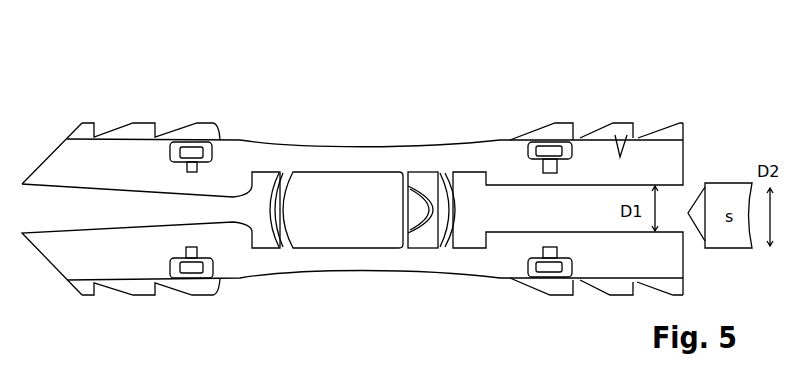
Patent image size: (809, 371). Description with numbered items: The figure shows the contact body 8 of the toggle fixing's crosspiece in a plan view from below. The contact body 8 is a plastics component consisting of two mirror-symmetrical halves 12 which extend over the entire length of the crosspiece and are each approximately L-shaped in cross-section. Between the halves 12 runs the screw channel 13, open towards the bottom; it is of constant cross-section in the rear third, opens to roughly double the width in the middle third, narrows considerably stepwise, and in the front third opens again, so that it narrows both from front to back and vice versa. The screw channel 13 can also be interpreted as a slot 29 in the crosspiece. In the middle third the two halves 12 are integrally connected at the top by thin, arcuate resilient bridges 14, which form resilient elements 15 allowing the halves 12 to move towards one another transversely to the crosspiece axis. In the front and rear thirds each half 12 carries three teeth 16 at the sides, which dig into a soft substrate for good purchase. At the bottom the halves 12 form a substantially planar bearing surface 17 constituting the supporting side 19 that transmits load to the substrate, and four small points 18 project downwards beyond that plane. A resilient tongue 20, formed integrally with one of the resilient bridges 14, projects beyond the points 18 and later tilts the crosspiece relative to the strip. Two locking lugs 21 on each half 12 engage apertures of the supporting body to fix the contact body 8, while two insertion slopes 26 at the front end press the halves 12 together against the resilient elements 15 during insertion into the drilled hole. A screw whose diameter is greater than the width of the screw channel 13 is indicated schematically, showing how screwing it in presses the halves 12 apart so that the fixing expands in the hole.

The contact body 8 is at (528, 98).
The halves 12 is at (680, 135).
The screw channel 13 is at (555, 211).
The slot 29 is at (583, 222).
The resilient bridges 14 is at (373, 257).
The resilient elements 15 is at (282, 210).
The teeth 16 is at (134, 132).
The bearing surface 17 is at (601, 177).
The supporting side 19 is at (633, 135).
The points 18 is at (200, 167).
The resilient tongue 20 is at (420, 200).
The locking lugs 21 is at (190, 150).
The insertion slopes 26 is at (47, 160).